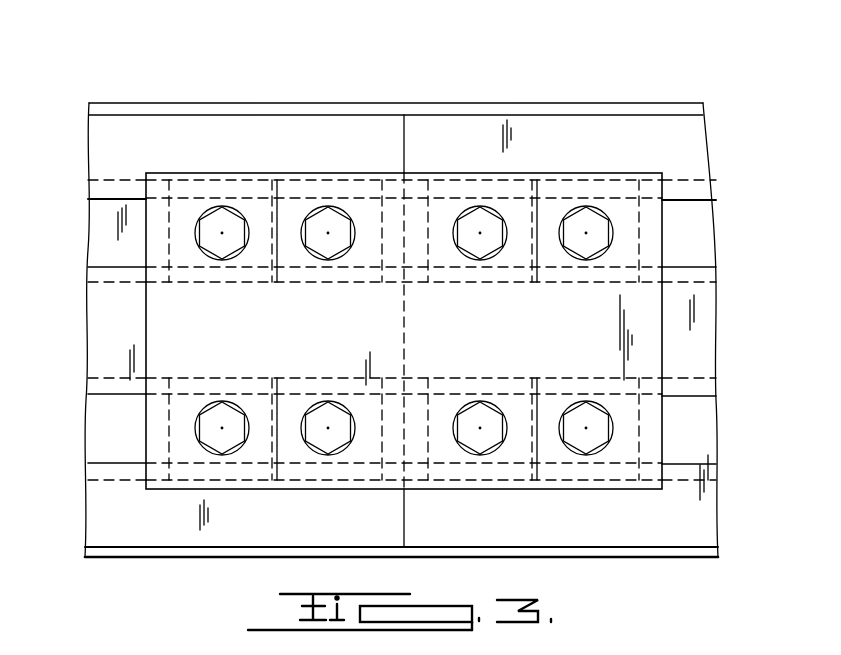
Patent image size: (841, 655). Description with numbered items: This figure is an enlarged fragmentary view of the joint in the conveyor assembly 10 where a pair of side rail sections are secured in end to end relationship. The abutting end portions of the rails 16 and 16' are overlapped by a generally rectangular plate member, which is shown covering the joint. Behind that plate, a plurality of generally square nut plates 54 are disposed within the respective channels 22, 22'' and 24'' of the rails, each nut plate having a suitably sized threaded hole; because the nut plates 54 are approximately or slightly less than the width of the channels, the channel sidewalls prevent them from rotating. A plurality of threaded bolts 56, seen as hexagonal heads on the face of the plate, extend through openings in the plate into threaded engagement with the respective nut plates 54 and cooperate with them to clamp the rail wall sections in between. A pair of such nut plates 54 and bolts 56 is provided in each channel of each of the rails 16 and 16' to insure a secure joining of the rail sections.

The conveyor assembly 10 is at (661, 92).
The rail 16 is at (229, 295).
The rail 16' is at (600, 280).
The channel 22 is at (89, 331).
The channel 22'' is at (719, 233).
The channel 24'' is at (722, 430).
The nut plates 54 is at (292, 270).
The threaded bolts 56 is at (318, 221).